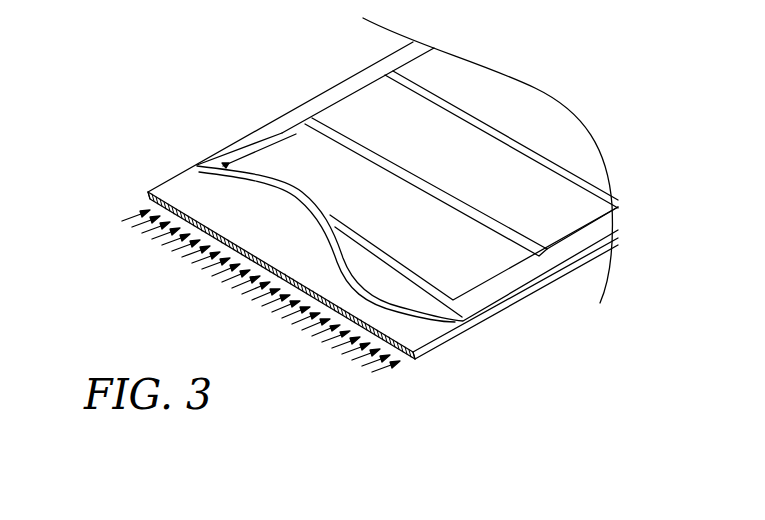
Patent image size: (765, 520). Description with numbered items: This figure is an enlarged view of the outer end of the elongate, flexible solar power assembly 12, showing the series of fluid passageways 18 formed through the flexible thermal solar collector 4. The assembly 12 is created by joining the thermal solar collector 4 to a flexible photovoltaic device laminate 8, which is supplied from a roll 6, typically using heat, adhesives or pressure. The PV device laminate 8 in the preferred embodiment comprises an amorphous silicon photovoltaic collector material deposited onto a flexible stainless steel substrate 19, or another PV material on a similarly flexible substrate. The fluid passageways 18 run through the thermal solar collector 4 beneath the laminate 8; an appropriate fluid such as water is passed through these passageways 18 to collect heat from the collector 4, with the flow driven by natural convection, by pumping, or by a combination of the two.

The solar power assembly 12 is at (567, 50).
The thermal solar collector 4 is at (430, 331).
The roll 6 is at (427, 65).
The photovoltaic device laminate 8 is at (283, 125).
The fluid passageways 18 is at (140, 222).
The stainless steel substrate 19 is at (227, 157).